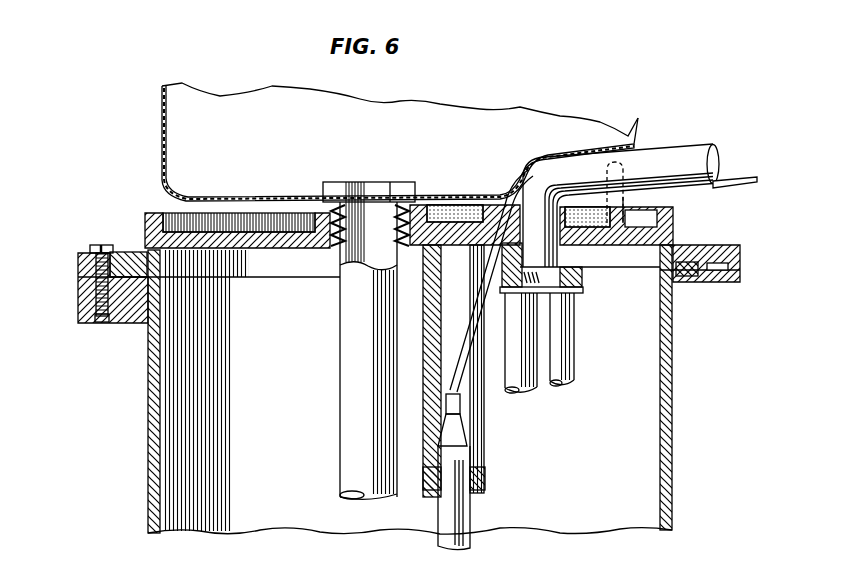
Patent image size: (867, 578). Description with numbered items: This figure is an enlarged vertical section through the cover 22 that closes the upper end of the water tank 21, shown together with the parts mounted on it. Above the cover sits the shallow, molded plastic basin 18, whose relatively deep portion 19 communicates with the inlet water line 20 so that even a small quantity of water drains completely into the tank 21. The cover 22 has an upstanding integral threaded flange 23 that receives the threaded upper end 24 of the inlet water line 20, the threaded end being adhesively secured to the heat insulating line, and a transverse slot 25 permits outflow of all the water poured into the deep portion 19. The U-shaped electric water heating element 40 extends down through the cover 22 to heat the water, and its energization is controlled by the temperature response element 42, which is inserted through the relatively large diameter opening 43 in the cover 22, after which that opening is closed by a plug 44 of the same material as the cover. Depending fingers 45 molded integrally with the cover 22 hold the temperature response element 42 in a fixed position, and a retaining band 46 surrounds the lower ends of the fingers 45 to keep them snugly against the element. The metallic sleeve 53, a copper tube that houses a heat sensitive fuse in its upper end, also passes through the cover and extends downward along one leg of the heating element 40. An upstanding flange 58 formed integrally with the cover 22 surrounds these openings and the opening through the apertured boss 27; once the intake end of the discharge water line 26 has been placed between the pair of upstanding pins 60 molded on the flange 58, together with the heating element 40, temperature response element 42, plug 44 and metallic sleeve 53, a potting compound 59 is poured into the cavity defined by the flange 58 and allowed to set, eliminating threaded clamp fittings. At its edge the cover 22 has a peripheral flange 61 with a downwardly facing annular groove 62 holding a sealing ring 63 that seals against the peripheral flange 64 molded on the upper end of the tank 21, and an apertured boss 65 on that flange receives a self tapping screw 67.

The basin 18 is at (206, 70).
The relatively deep portion 19 is at (180, 152).
The inlet water line 20 is at (353, 359).
The water tank 21 is at (153, 448).
The cover 22 is at (104, 192).
The threaded flange 23 is at (318, 222).
The threaded upper end 24 is at (335, 240).
The transverse slot 25 is at (338, 182).
The discharge water line 26 is at (678, 153).
The apertured boss 27 is at (582, 265).
The U-shaped electric water heating element 40 is at (533, 383).
The temperature response element 42 is at (443, 546).
The relatively large diameter opening 43 is at (438, 268).
The plug 44 is at (470, 232).
The depending fingers 45 is at (436, 425).
The retaining band 46 is at (485, 473).
The metallic sleeve 53 is at (577, 348).
The upstanding flange 58 is at (620, 219).
The potting compound 59 is at (447, 206).
The upstanding pins 60 is at (618, 170).
The peripheral flange 61 is at (82, 252).
The annular groove 62 is at (132, 252).
The sealing ring 63 is at (145, 237).
The peripheral flange 64 is at (740, 282).
The apertured boss 65 is at (85, 302).
The self tapping screw 67 is at (100, 322).